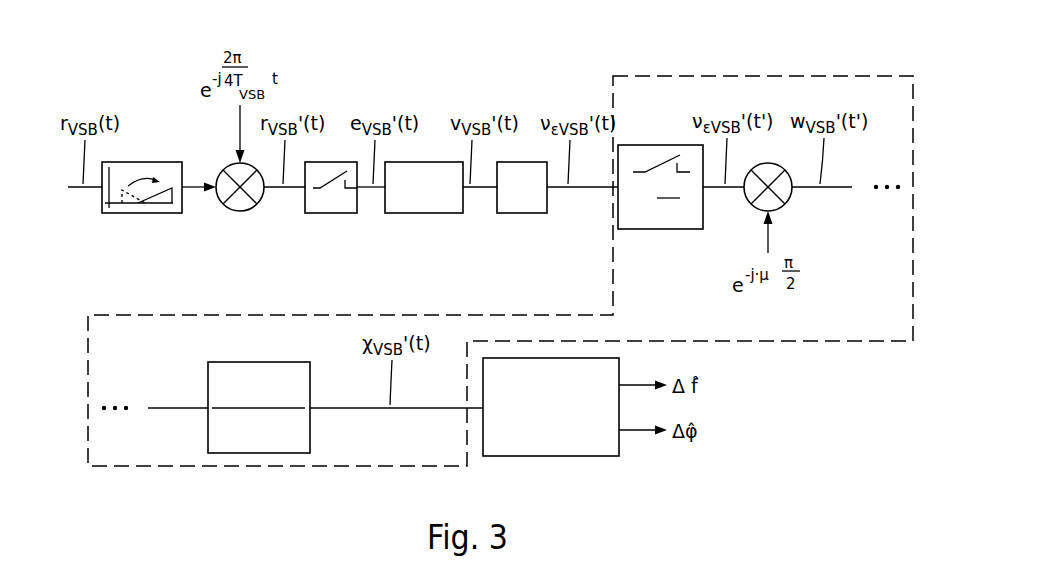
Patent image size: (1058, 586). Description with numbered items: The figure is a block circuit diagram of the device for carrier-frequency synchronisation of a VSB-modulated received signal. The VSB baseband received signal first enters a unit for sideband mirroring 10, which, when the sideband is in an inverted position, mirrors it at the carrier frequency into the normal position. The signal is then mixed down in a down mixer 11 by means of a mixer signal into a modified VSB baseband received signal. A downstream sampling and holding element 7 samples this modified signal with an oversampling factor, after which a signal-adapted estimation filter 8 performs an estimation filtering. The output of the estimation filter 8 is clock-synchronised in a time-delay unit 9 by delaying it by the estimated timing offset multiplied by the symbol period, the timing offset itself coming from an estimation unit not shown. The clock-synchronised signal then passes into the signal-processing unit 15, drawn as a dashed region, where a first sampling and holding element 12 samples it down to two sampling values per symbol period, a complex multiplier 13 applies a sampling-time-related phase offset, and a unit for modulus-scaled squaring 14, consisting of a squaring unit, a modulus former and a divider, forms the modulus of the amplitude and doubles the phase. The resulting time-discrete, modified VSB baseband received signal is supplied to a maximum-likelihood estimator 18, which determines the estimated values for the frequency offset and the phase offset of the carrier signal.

The sampling and holding element 7 is at (331, 160).
The signal-adapted estimation filter 8 is at (423, 160).
The time-delay unit 9 is at (516, 160).
The unit for sideband mirroring 10 is at (141, 160).
The down mixer 11 is at (258, 201).
The first sampling and holding element 12 is at (660, 144).
The complex multiplier 13 is at (786, 200).
The unit for modulus-scaled squaring 14 is at (207, 378).
The signal-processing unit 15 is at (745, 75).
The maximum-likelihood estimator 18 is at (551, 457).